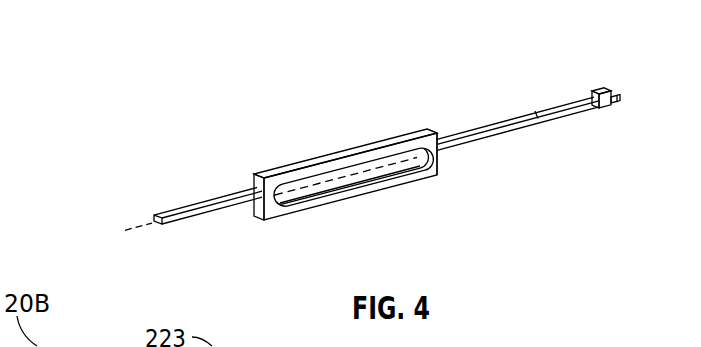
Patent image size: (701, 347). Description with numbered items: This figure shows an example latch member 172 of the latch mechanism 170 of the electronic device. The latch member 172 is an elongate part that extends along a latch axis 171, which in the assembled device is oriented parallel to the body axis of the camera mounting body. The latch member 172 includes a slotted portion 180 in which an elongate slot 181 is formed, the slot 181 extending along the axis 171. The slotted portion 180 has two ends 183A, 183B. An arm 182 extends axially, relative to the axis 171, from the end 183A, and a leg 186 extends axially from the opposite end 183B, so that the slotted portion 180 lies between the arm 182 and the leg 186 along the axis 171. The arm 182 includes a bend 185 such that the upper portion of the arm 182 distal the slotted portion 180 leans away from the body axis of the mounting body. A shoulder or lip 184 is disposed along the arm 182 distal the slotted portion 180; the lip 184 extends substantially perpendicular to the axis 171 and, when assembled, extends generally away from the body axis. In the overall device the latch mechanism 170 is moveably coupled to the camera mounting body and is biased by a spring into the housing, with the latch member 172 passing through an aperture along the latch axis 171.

The latch mechanism 170 is at (149, 88).
The latch axis 171 is at (381, 165).
The latch member 172 is at (292, 169).
The slotted portion 180 is at (371, 143).
The elongate slot 181 is at (356, 189).
The arm 182 is at (544, 124).
The end 183A is at (439, 176).
The end 183B is at (256, 212).
The lip 184 is at (598, 88).
The bend 185 is at (603, 108).
The leg 186 is at (173, 210).